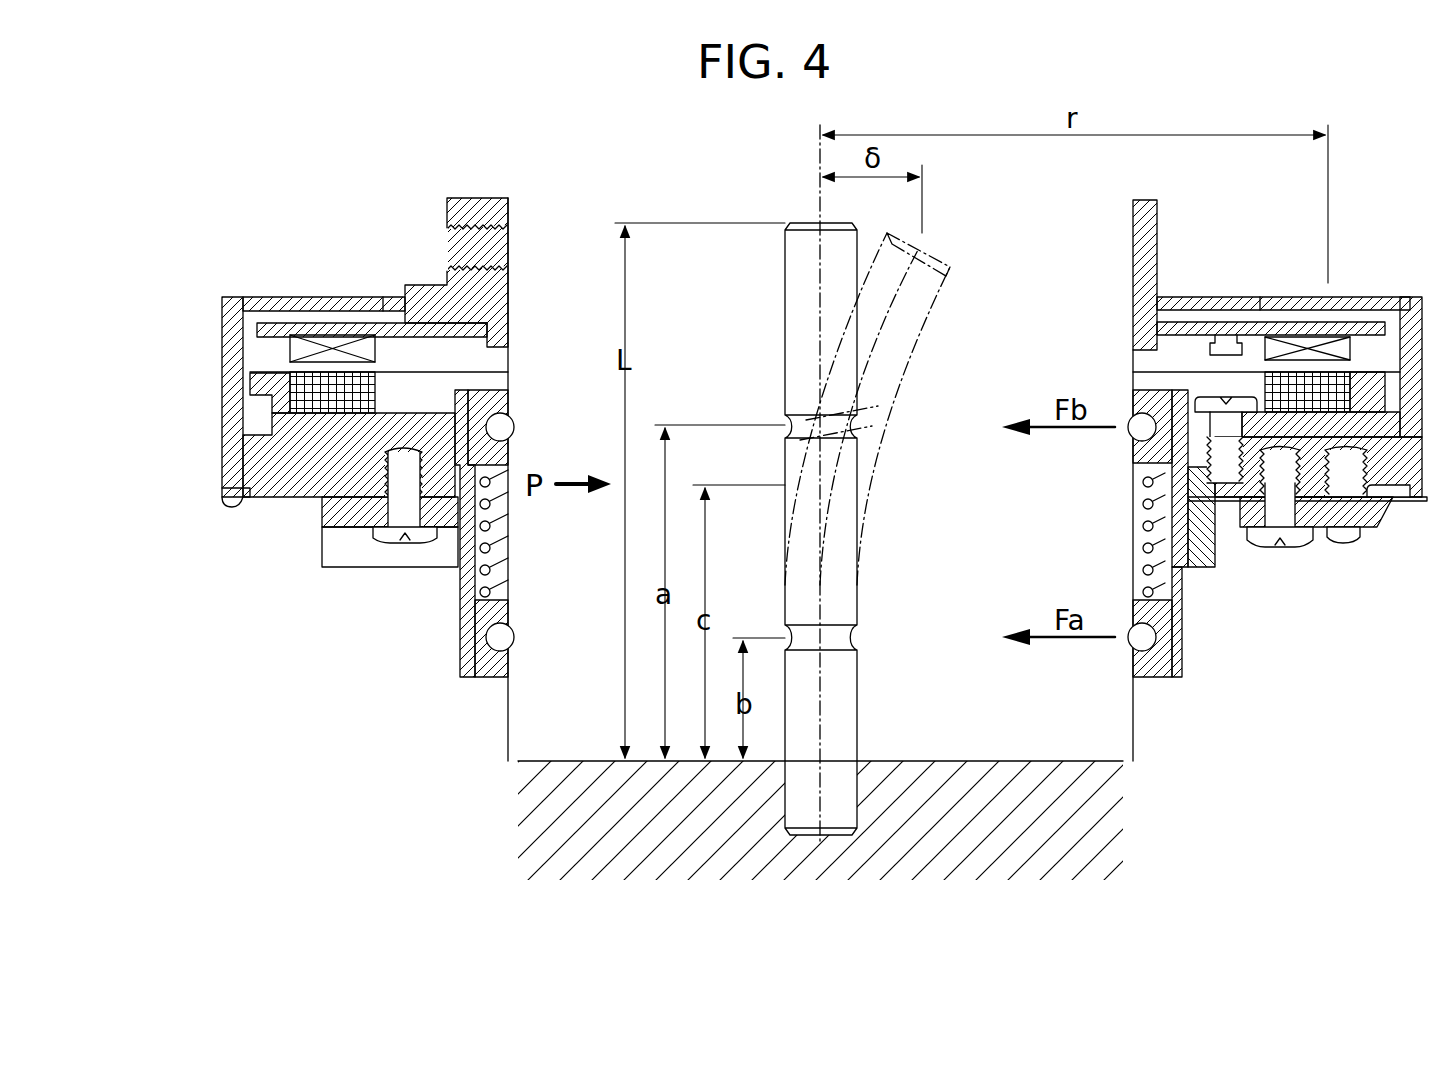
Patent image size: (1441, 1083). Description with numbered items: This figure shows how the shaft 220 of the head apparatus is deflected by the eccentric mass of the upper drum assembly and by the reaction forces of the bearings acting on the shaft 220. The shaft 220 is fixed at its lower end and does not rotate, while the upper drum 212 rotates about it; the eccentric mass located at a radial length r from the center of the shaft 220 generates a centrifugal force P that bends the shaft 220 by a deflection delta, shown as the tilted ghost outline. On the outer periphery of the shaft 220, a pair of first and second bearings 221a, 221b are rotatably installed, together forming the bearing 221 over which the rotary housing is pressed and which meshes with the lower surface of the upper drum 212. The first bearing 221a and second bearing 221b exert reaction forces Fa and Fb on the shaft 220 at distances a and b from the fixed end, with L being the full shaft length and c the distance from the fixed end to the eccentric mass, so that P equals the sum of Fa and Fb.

The shaft 220 is at (805, 242).
The upper drum 212 is at (225, 373).
The bearing 221 is at (373, 569).
The first bearing 221a is at (477, 447).
The second bearing 221b is at (477, 620).